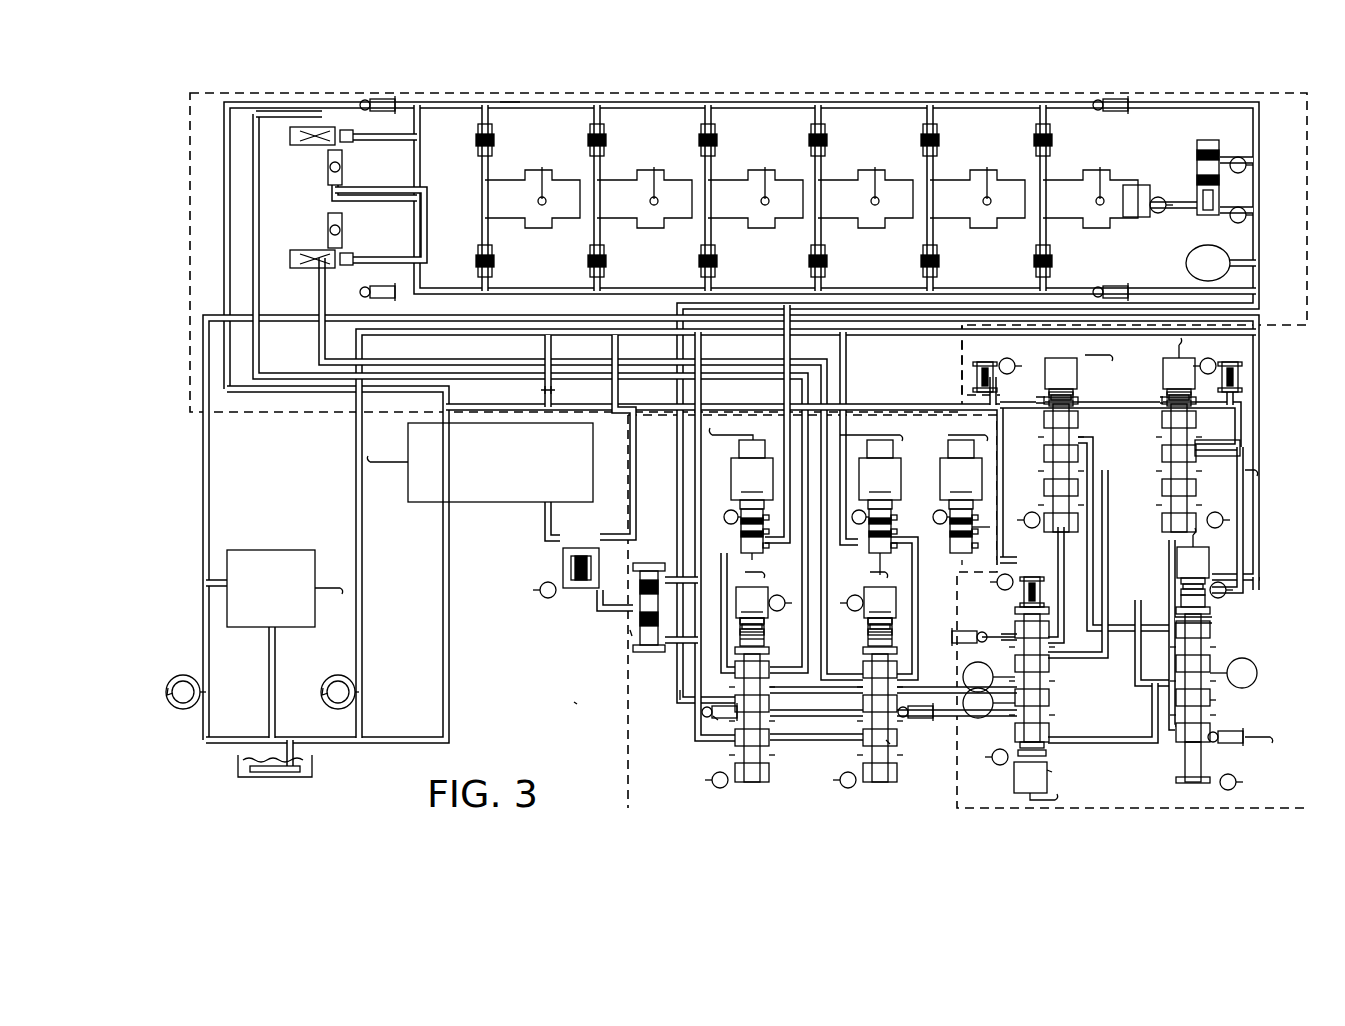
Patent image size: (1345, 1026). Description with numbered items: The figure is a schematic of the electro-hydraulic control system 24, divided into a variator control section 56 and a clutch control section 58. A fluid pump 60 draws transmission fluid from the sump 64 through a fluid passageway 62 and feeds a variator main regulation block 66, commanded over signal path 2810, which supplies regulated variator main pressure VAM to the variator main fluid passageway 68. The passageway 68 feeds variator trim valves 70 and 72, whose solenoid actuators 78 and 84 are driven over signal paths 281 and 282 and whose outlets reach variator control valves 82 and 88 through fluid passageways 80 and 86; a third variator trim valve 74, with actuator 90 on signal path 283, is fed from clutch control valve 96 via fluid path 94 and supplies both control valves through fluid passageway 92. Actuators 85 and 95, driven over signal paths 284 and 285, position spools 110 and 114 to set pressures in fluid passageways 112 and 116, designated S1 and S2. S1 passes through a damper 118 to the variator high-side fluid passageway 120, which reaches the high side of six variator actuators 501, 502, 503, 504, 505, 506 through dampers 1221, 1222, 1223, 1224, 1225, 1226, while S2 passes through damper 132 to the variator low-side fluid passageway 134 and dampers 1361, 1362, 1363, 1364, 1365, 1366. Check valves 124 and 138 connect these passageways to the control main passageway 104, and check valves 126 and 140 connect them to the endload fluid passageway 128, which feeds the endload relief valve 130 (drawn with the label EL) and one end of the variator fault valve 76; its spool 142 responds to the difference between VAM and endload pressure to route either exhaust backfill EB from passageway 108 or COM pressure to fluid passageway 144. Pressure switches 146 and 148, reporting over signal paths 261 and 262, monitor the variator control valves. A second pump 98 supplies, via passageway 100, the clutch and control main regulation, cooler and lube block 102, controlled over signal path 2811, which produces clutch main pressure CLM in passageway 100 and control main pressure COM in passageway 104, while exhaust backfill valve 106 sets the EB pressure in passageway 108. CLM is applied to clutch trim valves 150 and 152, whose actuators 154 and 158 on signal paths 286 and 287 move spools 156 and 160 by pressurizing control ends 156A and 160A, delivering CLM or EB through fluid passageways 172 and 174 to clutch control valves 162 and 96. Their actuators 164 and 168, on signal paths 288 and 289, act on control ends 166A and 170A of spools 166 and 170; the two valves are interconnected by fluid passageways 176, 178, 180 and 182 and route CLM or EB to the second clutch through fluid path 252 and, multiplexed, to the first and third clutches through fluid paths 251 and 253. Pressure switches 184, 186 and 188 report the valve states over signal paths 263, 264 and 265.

The electro-hydraulic control system 24 is at (575, 703).
The variator control section 56 is at (627, 745).
The clutch control section 58 is at (1309, 612).
The fluid pump 60 is at (180, 712).
The fluid passageway 62 is at (237, 736).
The sump 64 is at (312, 770).
The variator main regulation block 66 is at (265, 549).
The variator main fluid passageway 68 is at (210, 486).
The variator trim valve 70 is at (766, 554).
The variator trim valve 72 is at (870, 558).
The variator trim valve 74 is at (940, 555).
The variator fault valve 76 is at (617, 638).
The actuator 78 is at (752, 474).
The fluid passageway 80 is at (750, 553).
The variator control valve 82 is at (730, 746).
The actuator 84 is at (880, 474).
The actuator 85 is at (764, 611).
The fluid passageway 86 is at (891, 612).
The variator control valve 88 is at (855, 763).
The actuator 90 is at (961, 474).
The fluid passageway 92 is at (972, 663).
The fluid path 94 is at (1000, 545).
The actuator 95 is at (868, 611).
The clutch control valve 96 is at (1228, 705).
The fluid pump 98 is at (339, 676).
The clutch main fluid passageway 100 is at (364, 613).
The clutch and control main regulation, cooler and lube block 102 is at (496, 503).
The control main fluid passageway 104 is at (305, 393).
The exhaust backfill valve 106 is at (550, 603).
The exhaust backfill fluid passageway 108 is at (617, 608).
The spool 110 is at (735, 690).
The fluid passageway 112 is at (262, 232).
The spool 114 is at (855, 736).
The fluid passageway 116 is at (318, 300).
The damper 118 is at (346, 151).
The variator high-side fluid passageway 120 is at (504, 101).
The damper 1221 is at (478, 134).
The damper 1222 is at (590, 134).
The damper 1223 is at (701, 134).
The damper 1224 is at (811, 134).
The damper 1225 is at (923, 134).
The damper 1226 is at (1036, 134).
The check valve 124 is at (379, 96).
The check valve 126 is at (1110, 96).
The endload fluid passageway 128 is at (1262, 113).
The endload relief valve 130 is at (1192, 226).
The damper 132 is at (350, 246).
The variator low-side fluid passageway 134 is at (515, 286).
The damper 1361 is at (478, 256).
The damper 1362 is at (590, 256).
The damper 1363 is at (701, 256).
The damper 1364 is at (811, 256).
The damper 1365 is at (923, 256).
The damper 1366 is at (1036, 256).
The check valve 138 is at (385, 297).
The check valve 140 is at (1108, 284).
The spool 142 is at (656, 610).
The fluid passageway 144 is at (678, 697).
The pressure switch 146 is at (715, 720).
The pressure switch 148 is at (888, 742).
The clutch trim valve 150 is at (968, 377).
The clutch trim valve 152 is at (1246, 396).
The actuator 154 is at (1054, 359).
The spool 156 is at (1078, 431).
The control end 156A is at (1058, 400).
The actuator 158 is at (1174, 358).
The spool 160 is at (1200, 470).
The control end 160A is at (1176, 399).
The clutch control valve 162 is at (1055, 772).
The actuator 164 is at (1013, 790).
The spool 166 is at (1020, 595).
The control end 166A is at (1046, 755).
The actuator 168 is at (1211, 560).
The spool 170 is at (1212, 634).
The control end 170A is at (1200, 620).
The fluid passageway 172 is at (1092, 508).
The fluid passageway 174 is at (1104, 555).
The fluid passageway 176 is at (1108, 632).
The fluid passageway 178 is at (1136, 660).
The fluid passageway 180 is at (1155, 745).
The fluid passageway 182 is at (1172, 740).
The pressure switch 184 is at (1026, 604).
The pressure switch 186 is at (1228, 456).
The pressure switch 188 is at (1225, 745).
The actuator 501 is at (538, 187).
The actuator 502 is at (650, 187).
The actuator 503 is at (761, 187).
The actuator 504 is at (871, 187).
The actuator 505 is at (983, 187).
The actuator 506 is at (1096, 187).
The C1 clutch fluid path 251 is at (972, 664).
The C2 clutch fluid path 252 is at (1258, 674).
The C3 clutch fluid path 253 is at (982, 717).
The signal path 261 is at (700, 712).
The signal path 262 is at (935, 720).
The signal path 263 is at (966, 642).
The signal path 264 is at (1248, 478).
The signal path 265 is at (1271, 740).
The signal path 281 is at (713, 437).
The signal path 282 is at (898, 440).
The signal path 283 is at (968, 434).
The signal path 284 is at (762, 573).
The signal path 285 is at (872, 573).
The signal path 286 is at (1090, 356).
The signal path 287 is at (1181, 345).
The signal path 288 is at (1062, 796).
The signal path 289 is at (1196, 536).
The signal path 2810 is at (323, 588).
The signal path 2811 is at (390, 464).
The S1 fluid path S1 is at (272, 196).
The S2 fluid path S2 is at (342, 306).
The control main pressure COM is at (503, 389).
The exhaust backfill pressure EB is at (610, 527).
The exhaust line EL is at (1208, 263).
The variator main pressure VAM is at (229, 657).
The clutch main pressure CLM is at (385, 657).